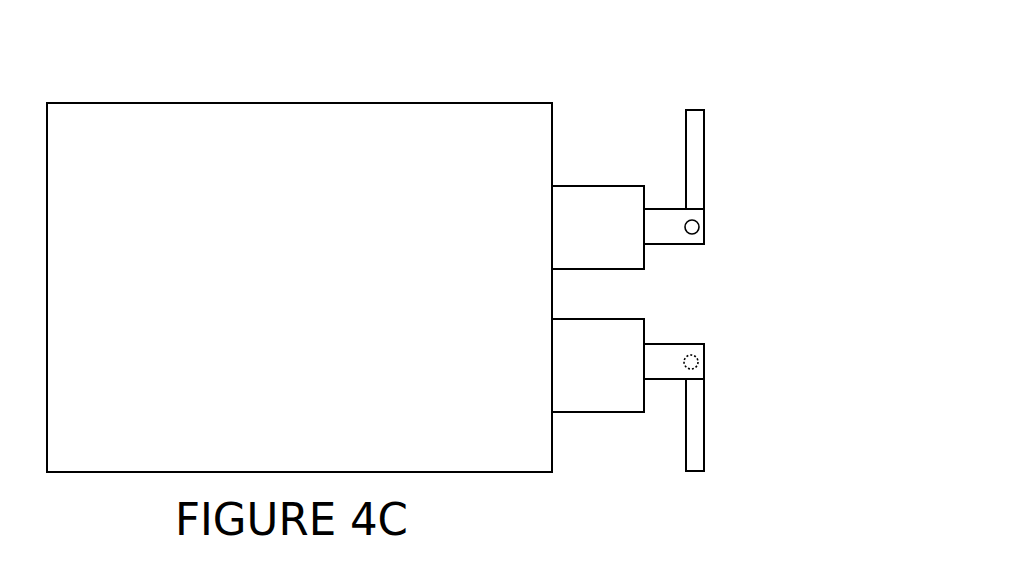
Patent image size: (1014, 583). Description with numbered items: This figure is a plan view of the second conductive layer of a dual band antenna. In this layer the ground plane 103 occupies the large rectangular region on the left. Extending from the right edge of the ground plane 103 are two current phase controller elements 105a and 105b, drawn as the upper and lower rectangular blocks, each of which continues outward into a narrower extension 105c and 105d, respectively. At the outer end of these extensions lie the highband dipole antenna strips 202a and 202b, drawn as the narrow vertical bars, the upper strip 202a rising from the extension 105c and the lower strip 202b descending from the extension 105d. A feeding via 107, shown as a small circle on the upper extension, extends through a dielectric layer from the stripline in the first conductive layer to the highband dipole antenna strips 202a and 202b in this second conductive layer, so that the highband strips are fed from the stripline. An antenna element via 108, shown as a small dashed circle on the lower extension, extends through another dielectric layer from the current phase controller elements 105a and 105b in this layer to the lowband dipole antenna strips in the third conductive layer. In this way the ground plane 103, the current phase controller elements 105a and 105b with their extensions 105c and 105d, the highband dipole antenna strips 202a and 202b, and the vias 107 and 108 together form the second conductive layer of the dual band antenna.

The ground plane 103 is at (267, 203).
The current phase controller element 105a is at (594, 225).
The current phase controller element 105b is at (594, 378).
The first arm extension 105c is at (658, 226).
The second arm extension 105d is at (670, 360).
The feeding via 107 is at (698, 223).
The antenna element via 108 is at (696, 361).
The highband dipole antenna strip 202a is at (694, 167).
The highband dipole antenna strip 202b is at (696, 432).